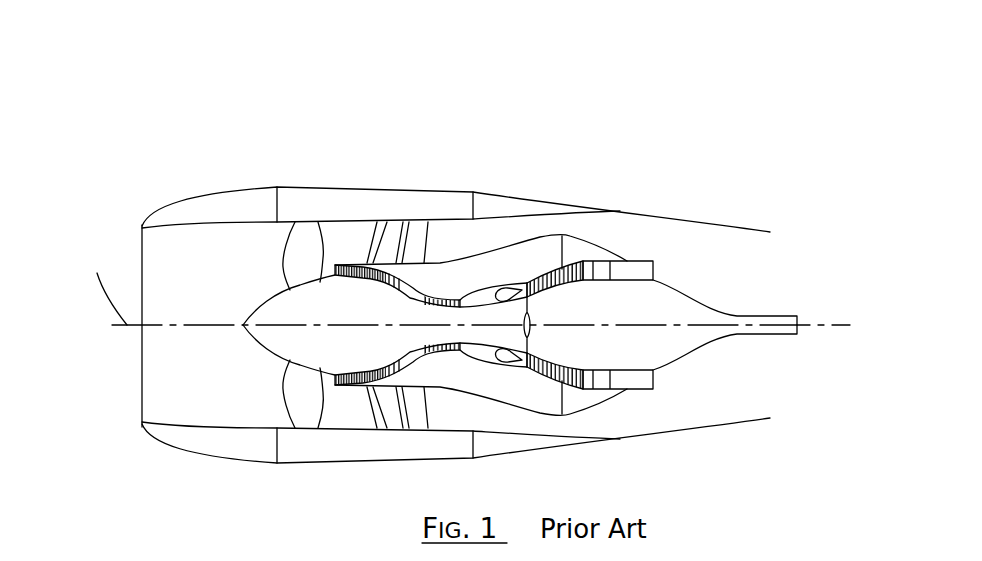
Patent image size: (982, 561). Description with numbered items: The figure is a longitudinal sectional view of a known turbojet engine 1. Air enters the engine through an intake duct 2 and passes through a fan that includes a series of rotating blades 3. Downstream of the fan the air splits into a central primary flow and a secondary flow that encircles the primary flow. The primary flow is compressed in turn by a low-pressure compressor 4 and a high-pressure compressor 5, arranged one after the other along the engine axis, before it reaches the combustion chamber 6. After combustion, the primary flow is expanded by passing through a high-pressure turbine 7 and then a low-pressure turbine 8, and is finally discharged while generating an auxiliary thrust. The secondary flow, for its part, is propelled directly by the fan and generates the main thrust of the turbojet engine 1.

The turbojet engine 1 is at (187, 116).
The intake duct 2 is at (218, 325).
The rotating blades 3 is at (295, 395).
The low-pressure compressor 4 is at (348, 263).
The high-pressure compressor 5 is at (445, 292).
The combustion chamber 6 is at (510, 283).
The high-pressure turbine 7 is at (543, 268).
The low-pressure turbine 8 is at (578, 256).